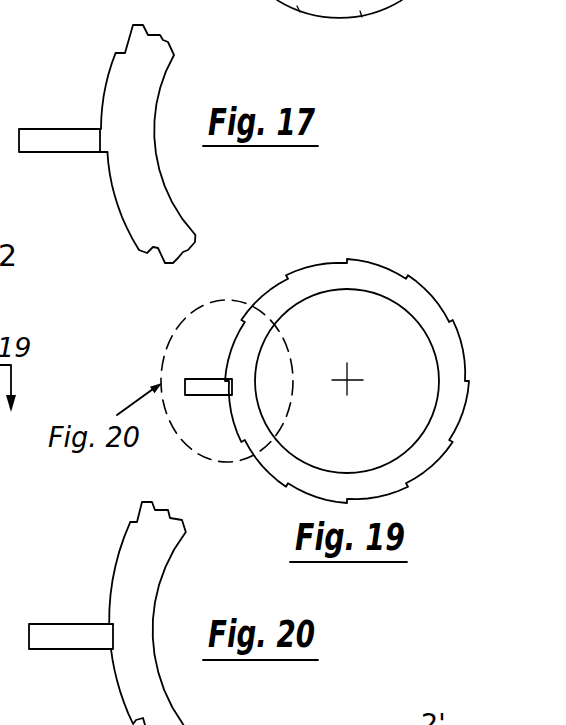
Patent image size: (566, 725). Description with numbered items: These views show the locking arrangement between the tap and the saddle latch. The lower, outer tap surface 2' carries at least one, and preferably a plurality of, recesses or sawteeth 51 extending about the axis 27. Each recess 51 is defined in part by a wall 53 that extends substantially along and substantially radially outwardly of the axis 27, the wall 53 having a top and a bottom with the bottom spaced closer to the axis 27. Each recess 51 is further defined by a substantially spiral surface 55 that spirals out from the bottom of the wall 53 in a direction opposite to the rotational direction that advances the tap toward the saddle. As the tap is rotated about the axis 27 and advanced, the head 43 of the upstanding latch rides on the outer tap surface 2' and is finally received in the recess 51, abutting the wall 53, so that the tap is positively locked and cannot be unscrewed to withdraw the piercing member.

In FIG. 19, the outer tap surface 2' is at (347, 356).
In FIG. 19, the axis 27 is at (353, 377).
In FIG. 17, the head 43 is at (50, 137).
In FIG. 19, the head 43 is at (210, 379).
In FIG. 20, the head 43 is at (65, 637).
In FIG. 19, the recess 51 is at (218, 409).
In FIG. 17, the wall 53 is at (106, 157).
In FIG. 20, the wall 53 is at (110, 623).
In FIG. 17, the spiral surface 55 is at (113, 82).
In FIG. 20, the spiral surface 55 is at (115, 565).